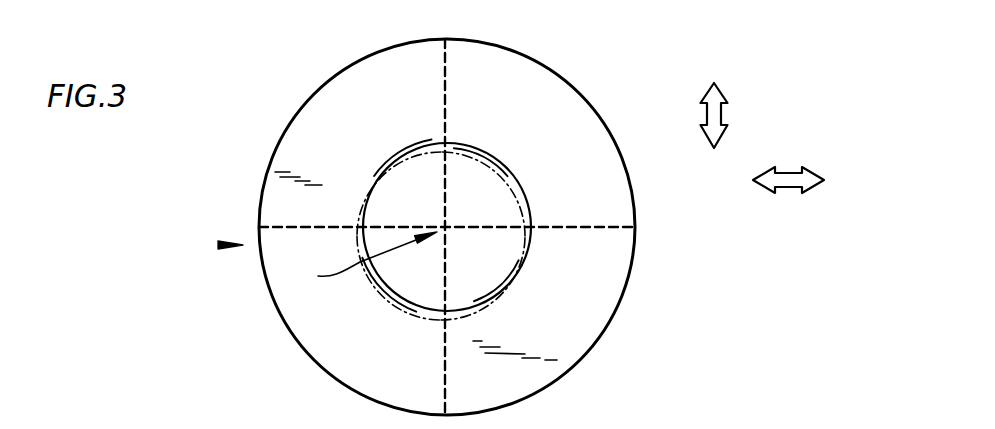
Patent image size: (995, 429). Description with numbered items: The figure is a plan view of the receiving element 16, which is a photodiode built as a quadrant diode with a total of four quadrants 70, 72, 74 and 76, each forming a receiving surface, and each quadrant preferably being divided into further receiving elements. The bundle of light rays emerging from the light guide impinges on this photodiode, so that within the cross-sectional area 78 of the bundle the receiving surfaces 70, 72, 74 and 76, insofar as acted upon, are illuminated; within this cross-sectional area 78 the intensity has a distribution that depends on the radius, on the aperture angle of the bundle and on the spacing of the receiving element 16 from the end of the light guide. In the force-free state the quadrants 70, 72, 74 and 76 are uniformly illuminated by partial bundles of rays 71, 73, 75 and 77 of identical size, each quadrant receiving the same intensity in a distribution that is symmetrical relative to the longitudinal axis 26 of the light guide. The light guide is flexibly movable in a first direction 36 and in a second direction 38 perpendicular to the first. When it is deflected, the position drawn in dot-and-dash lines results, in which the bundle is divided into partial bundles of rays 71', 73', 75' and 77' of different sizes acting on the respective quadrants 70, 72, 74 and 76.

The receiving element 16 is at (219, 245).
The longitudinal axis 26 is at (456, 234).
The first direction 36 is at (788, 190).
The second direction 38 is at (722, 110).
The quadrant 70 is at (558, 127).
The partial bundle of rays 71 is at (482, 130).
The partial bundle of rays 71' is at (515, 194).
The quadrant 72 is at (312, 138).
The partial bundle of rays 73 is at (394, 142).
The partial bundle of rays 73' is at (399, 159).
The quadrant 74 is at (345, 346).
The partial bundle of rays 75 is at (389, 302).
The partial bundle of rays 75' is at (399, 314).
The quadrant 76 is at (580, 343).
The partial bundle of rays 77 is at (507, 305).
The partial bundle of rays 77' is at (515, 278).
The cross-sectional area 78 is at (362, 255).